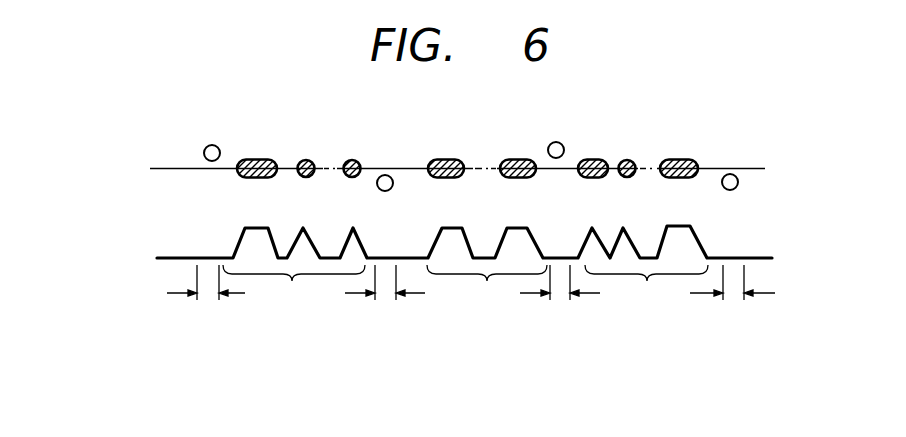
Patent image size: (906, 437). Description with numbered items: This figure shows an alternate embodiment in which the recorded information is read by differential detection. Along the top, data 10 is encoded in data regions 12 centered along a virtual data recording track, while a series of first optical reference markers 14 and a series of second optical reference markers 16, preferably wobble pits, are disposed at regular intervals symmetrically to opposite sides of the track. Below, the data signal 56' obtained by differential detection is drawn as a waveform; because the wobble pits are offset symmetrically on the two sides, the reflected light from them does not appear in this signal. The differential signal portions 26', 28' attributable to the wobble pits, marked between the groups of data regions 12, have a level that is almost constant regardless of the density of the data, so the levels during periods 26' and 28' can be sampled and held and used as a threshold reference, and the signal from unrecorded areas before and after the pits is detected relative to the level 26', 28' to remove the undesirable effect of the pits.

The data 10 is at (347, 161).
The first optical reference markers 14 is at (209, 145).
The second optical reference markers 16 is at (391, 189).
The data signal 56' is at (436, 249).
The data regions 12 is at (465, 289).
The differential signal portion 26' is at (384, 307).
The differential signal portion 28' is at (560, 307).